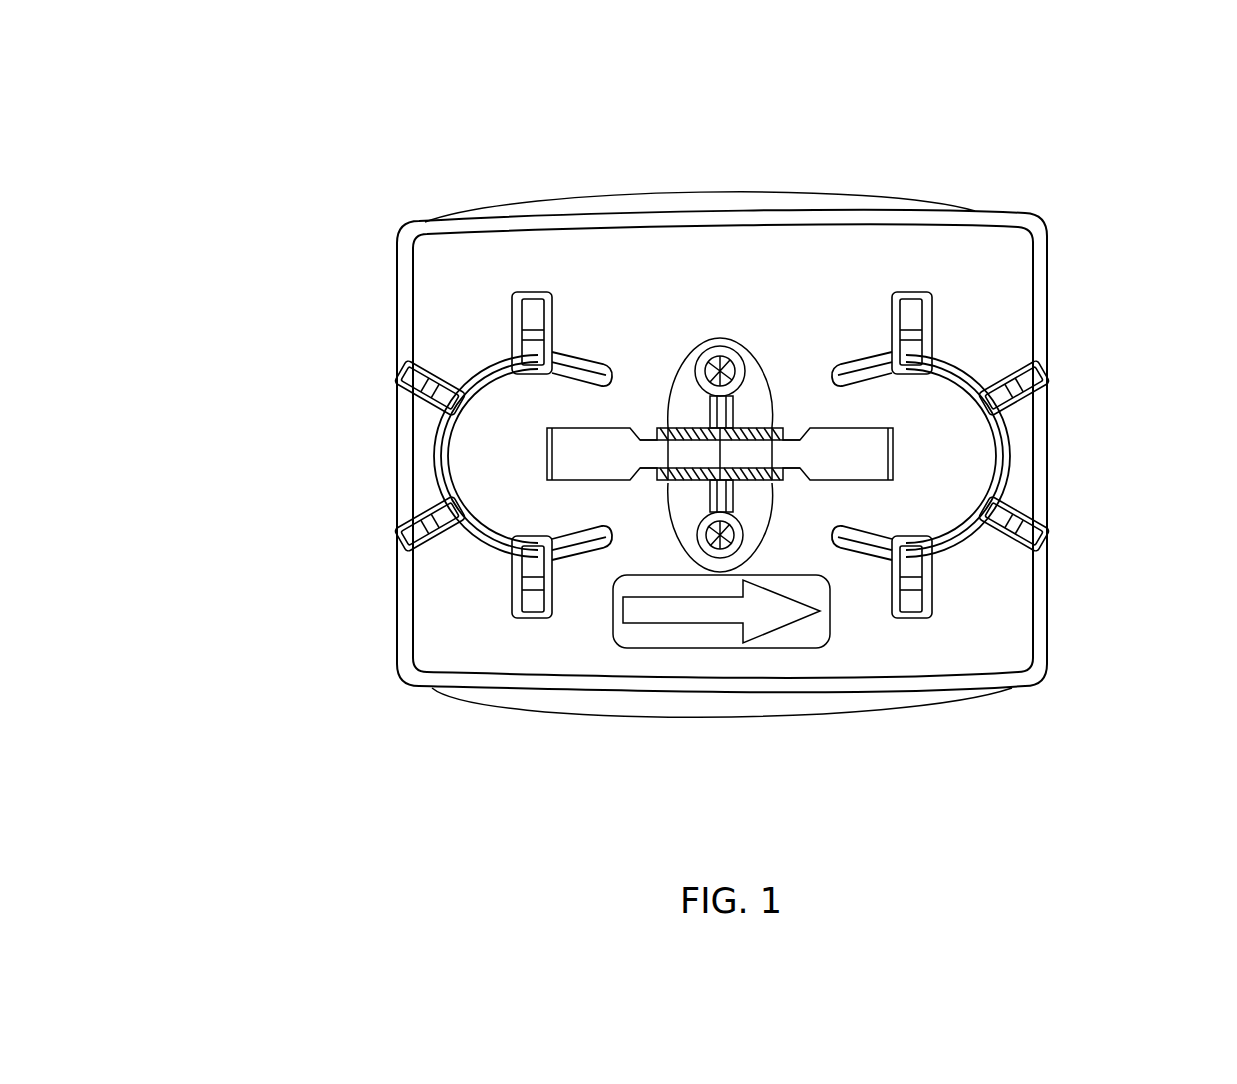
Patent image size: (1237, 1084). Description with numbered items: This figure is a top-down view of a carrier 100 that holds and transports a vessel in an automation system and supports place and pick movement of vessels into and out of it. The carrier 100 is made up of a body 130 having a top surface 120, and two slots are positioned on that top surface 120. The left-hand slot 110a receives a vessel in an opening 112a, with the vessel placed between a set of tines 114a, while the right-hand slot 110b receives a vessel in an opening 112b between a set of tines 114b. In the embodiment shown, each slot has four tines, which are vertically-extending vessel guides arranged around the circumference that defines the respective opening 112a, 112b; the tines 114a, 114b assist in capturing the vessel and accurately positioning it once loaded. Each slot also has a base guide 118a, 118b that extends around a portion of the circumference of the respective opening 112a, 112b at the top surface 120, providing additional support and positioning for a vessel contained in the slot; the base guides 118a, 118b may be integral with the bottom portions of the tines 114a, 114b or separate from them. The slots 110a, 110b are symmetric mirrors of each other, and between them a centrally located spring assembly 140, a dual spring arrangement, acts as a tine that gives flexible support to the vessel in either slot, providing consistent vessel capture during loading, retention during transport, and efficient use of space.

The carrier 100 is at (224, 126).
The left-hand slot 110a is at (478, 341).
The right-hand slot 110b is at (978, 343).
The opening 112a is at (520, 503).
The opening 112b is at (907, 497).
The tines 114a is at (523, 290).
The tines 114b is at (907, 292).
The base guide 118a is at (577, 560).
The base guide 118b is at (867, 557).
The top surface 120 is at (1003, 243).
The body 130 is at (807, 203).
The spring assembly 140 is at (707, 338).